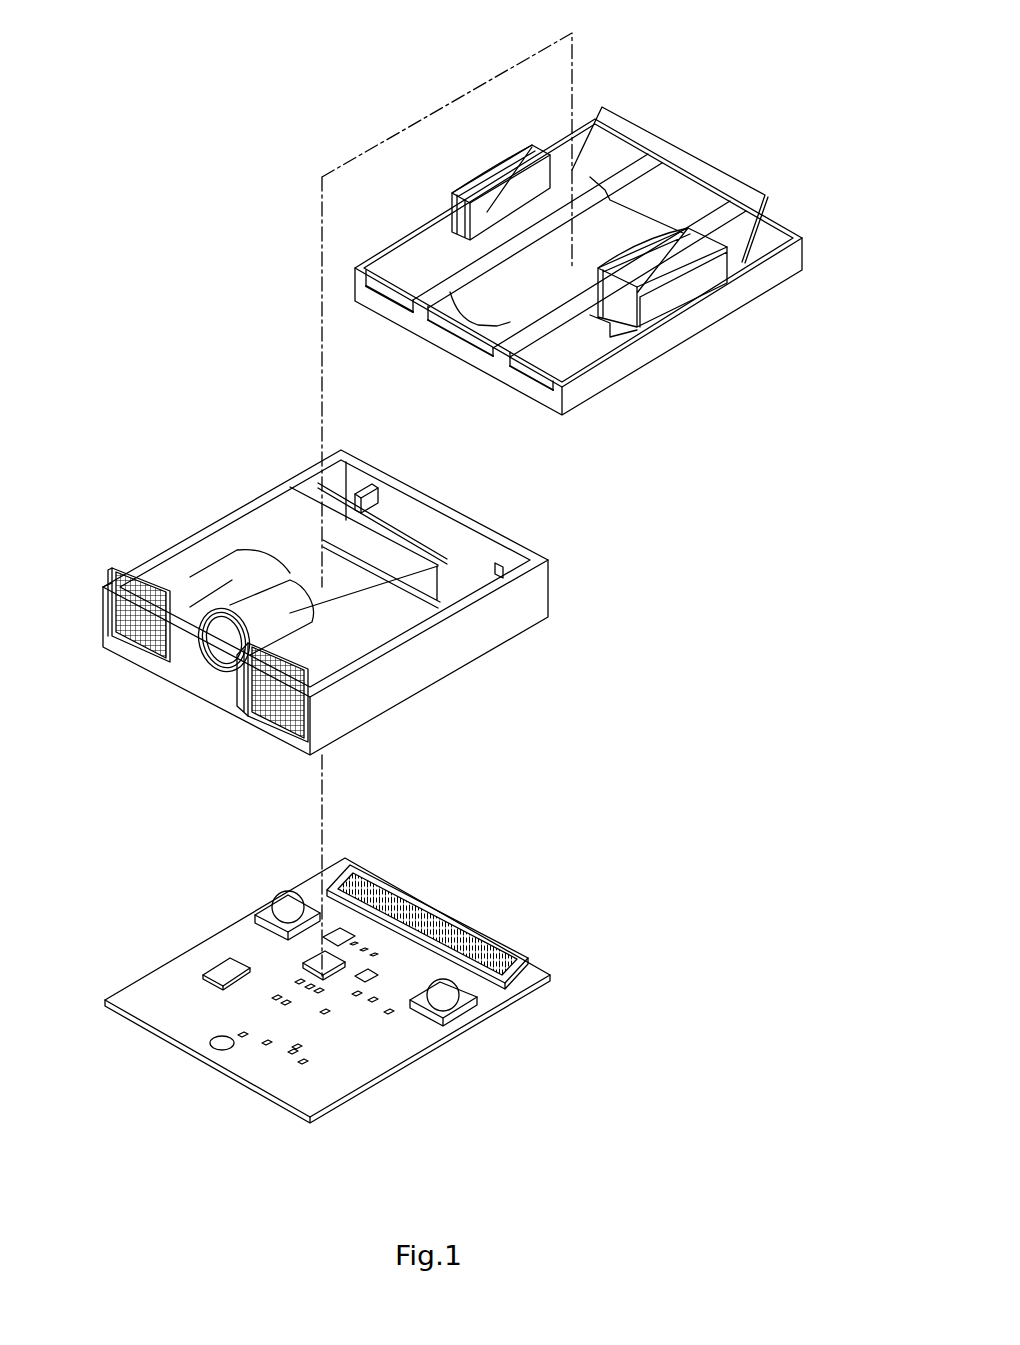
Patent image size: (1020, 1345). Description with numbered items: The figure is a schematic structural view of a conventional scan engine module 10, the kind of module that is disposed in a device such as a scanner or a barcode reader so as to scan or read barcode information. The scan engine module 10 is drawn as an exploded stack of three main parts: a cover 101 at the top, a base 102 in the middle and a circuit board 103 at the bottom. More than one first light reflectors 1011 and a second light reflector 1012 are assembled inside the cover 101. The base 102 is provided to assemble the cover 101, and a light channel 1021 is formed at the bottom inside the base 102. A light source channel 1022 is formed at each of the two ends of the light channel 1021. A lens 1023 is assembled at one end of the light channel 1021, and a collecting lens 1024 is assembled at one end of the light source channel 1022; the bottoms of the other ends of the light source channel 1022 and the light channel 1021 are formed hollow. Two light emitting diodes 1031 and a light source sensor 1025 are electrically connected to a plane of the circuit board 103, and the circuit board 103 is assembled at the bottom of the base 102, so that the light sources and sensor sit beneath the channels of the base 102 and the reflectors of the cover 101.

The scan engine module 10 is at (165, 228).
The cover 101 is at (677, 340).
The first light reflector 1011 is at (483, 195).
The second light reflector 1012 is at (702, 187).
The base 102 is at (510, 622).
The light channel 1021 is at (303, 580).
The light source channel 1022 is at (197, 560).
The lens 1023 is at (215, 662).
The collecting lens 1024 is at (107, 587).
The circuit board 103 is at (403, 1050).
The light emitting diode 1031 is at (285, 905).
The light source sensor 1025 is at (497, 937).